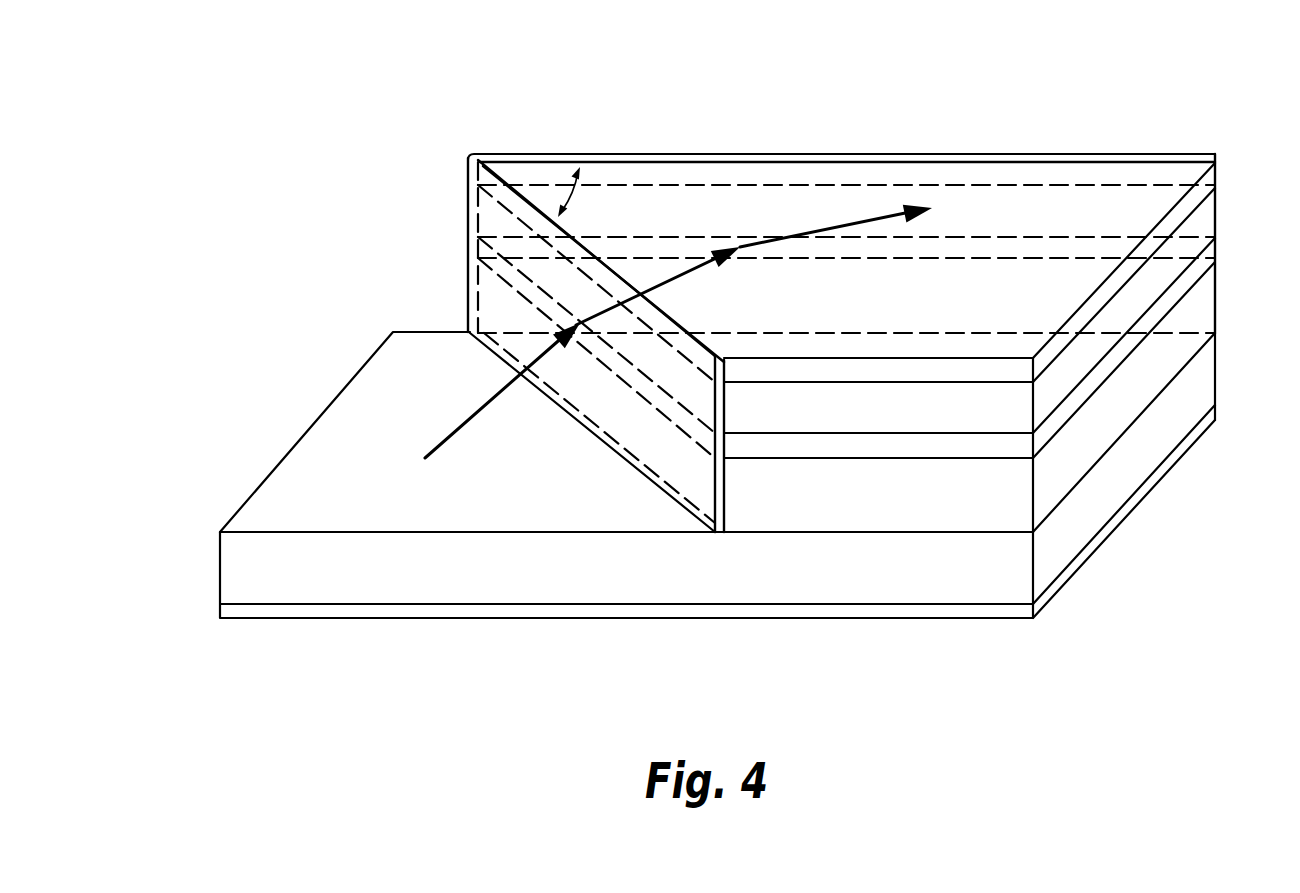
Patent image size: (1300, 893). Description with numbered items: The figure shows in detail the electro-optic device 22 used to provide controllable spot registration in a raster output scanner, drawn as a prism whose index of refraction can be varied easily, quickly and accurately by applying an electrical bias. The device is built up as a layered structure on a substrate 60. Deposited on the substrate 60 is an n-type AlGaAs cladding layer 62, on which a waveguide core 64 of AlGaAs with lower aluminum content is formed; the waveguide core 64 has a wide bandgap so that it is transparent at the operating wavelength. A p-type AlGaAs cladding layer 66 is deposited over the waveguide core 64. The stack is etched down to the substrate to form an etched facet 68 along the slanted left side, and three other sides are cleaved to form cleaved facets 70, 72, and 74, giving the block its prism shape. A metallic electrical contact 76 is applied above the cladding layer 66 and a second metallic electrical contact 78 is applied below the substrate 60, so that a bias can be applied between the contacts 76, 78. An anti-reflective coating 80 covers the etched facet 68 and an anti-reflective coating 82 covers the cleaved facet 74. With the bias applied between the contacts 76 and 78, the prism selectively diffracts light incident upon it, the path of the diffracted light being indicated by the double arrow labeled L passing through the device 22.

The electro-optic device 22 is at (336, 143).
The substrate 60 is at (220, 563).
The n-AlGaAs cladding layer 62 is at (1218, 307).
The waveguide core 64 is at (1218, 250).
The p-AlGaAs cladding layer 66 is at (1218, 210).
The etched facet 68 is at (725, 487).
The cleaved facet 70 is at (935, 505).
The cleaved facet 72 is at (1088, 437).
The cleaved facet 74 is at (1022, 207).
The metallic electrical contact 76 is at (1218, 176).
The metallic electrical contact 78 is at (1215, 413).
The anti-reflective coating 80 is at (468, 235).
The anti-reflective coating 82 is at (651, 153).